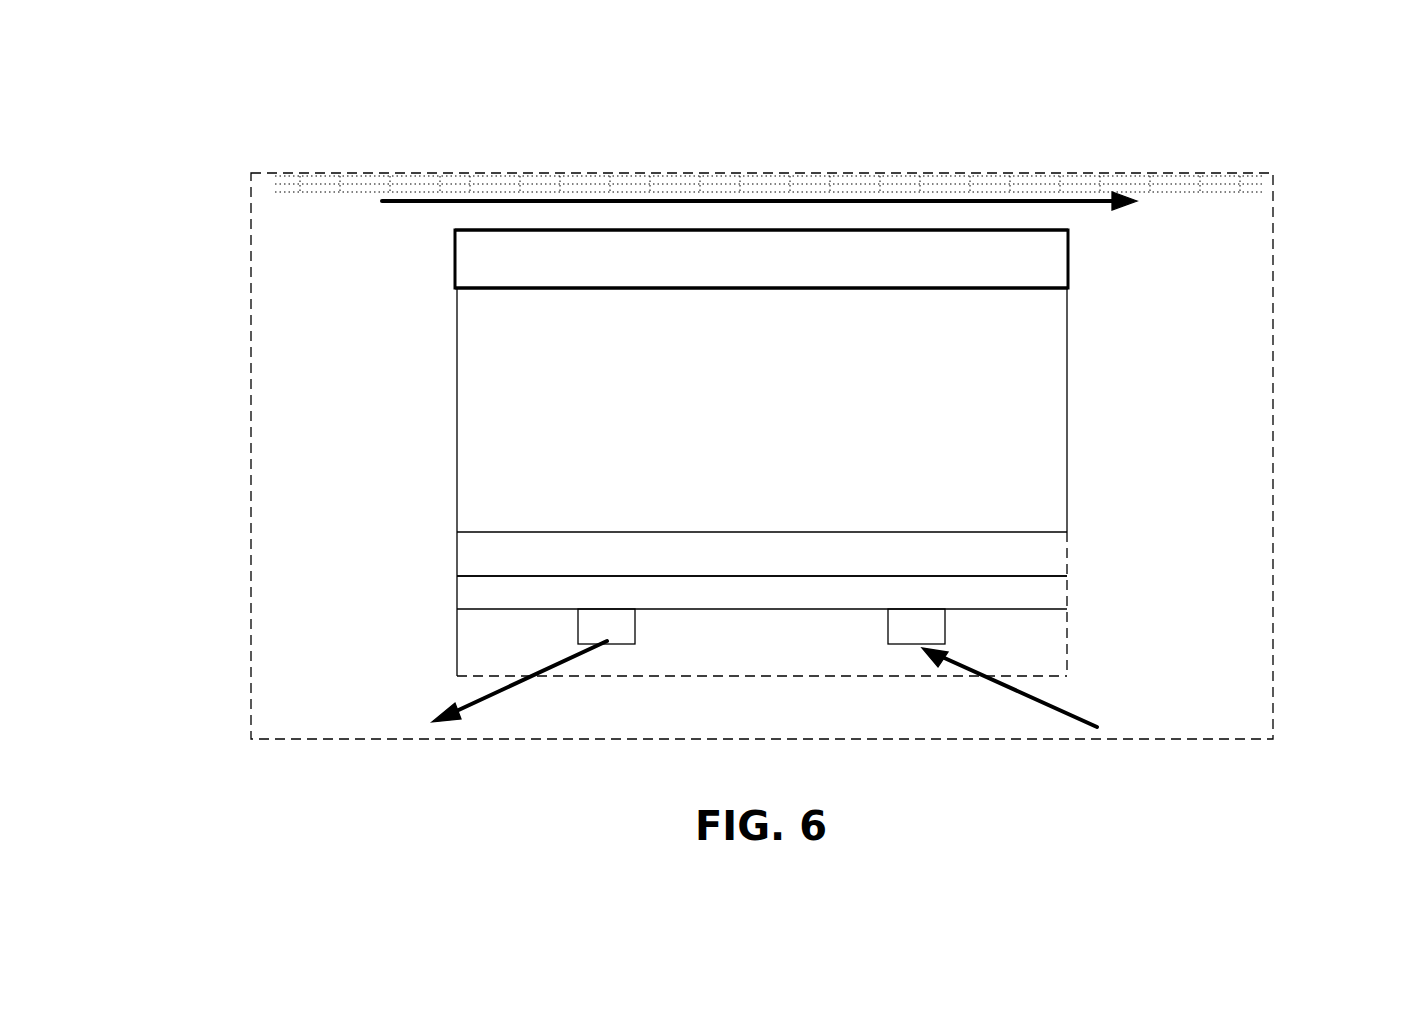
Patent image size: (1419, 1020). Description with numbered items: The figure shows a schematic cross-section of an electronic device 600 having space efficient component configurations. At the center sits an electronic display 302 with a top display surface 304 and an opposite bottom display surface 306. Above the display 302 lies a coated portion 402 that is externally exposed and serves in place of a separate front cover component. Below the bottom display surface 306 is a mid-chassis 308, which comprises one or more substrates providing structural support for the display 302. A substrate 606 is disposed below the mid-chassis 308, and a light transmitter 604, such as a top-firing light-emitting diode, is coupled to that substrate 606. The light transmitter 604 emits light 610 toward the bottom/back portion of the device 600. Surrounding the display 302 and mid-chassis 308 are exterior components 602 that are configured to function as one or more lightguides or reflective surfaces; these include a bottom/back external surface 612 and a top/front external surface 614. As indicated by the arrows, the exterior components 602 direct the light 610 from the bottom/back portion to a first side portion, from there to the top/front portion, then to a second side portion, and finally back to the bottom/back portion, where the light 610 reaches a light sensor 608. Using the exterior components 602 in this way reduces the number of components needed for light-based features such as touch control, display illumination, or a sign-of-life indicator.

The electronic device 600 is at (233, 82).
The coated portion 402 is at (360, 183).
The top display surface 304 is at (510, 230).
The top/front external surface 614 is at (673, 172).
The electronic display 302 is at (760, 243).
The bottom display surface 306 is at (1000, 288).
The exterior components 602 is at (268, 390).
The substrate 606 is at (553, 592).
The mid-chassis 308 is at (822, 457).
The light transmitter 604 is at (622, 637).
The light sensor 608 is at (903, 637).
The light 610 is at (502, 695).
The bottom/back external surface 612 is at (720, 740).